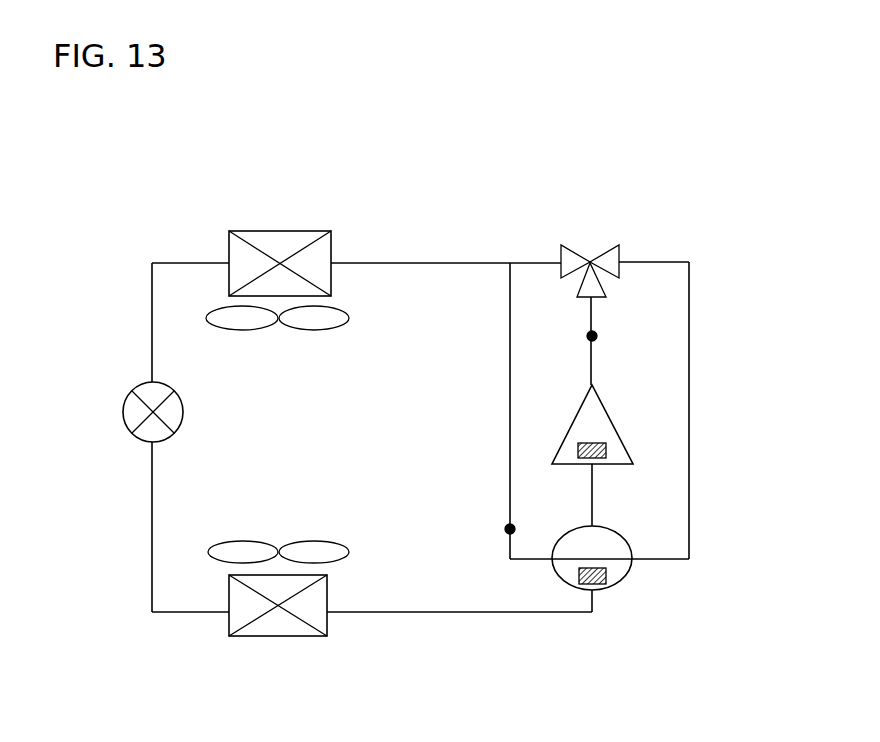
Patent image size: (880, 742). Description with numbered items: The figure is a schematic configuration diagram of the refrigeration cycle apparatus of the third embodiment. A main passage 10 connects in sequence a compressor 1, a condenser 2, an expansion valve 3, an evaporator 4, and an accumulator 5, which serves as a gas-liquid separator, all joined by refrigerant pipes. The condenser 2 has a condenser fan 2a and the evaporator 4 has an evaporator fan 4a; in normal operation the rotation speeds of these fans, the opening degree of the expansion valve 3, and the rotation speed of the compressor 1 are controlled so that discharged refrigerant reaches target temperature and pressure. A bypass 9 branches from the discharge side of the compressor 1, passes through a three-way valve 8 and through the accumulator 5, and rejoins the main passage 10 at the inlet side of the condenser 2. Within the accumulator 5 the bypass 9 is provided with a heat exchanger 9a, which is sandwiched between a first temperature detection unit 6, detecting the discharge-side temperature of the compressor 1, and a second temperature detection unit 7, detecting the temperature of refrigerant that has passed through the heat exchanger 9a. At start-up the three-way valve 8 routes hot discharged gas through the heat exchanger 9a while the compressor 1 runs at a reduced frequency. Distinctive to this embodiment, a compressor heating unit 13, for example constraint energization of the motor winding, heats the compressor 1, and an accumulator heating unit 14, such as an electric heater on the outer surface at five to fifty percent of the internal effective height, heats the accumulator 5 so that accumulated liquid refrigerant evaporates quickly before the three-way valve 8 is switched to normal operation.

The compressor 1 is at (612, 417).
The condenser 2 is at (297, 231).
The condenser fan 2a is at (312, 330).
The expansion valve 3 is at (183, 402).
The evaporator 4 is at (328, 595).
The evaporator fan 4a is at (250, 537).
The accumulator 5 is at (630, 543).
The first temperature detection unit 6 is at (595, 335).
The second temperature detection unit 7 is at (505, 529).
The three-way valve 8 is at (620, 260).
The bypass 9 is at (692, 283).
The heat exchanger 9a is at (567, 559).
The main passage 10 is at (407, 262).
The compressor heating unit 13 is at (607, 447).
The accumulator heating unit 14 is at (607, 572).